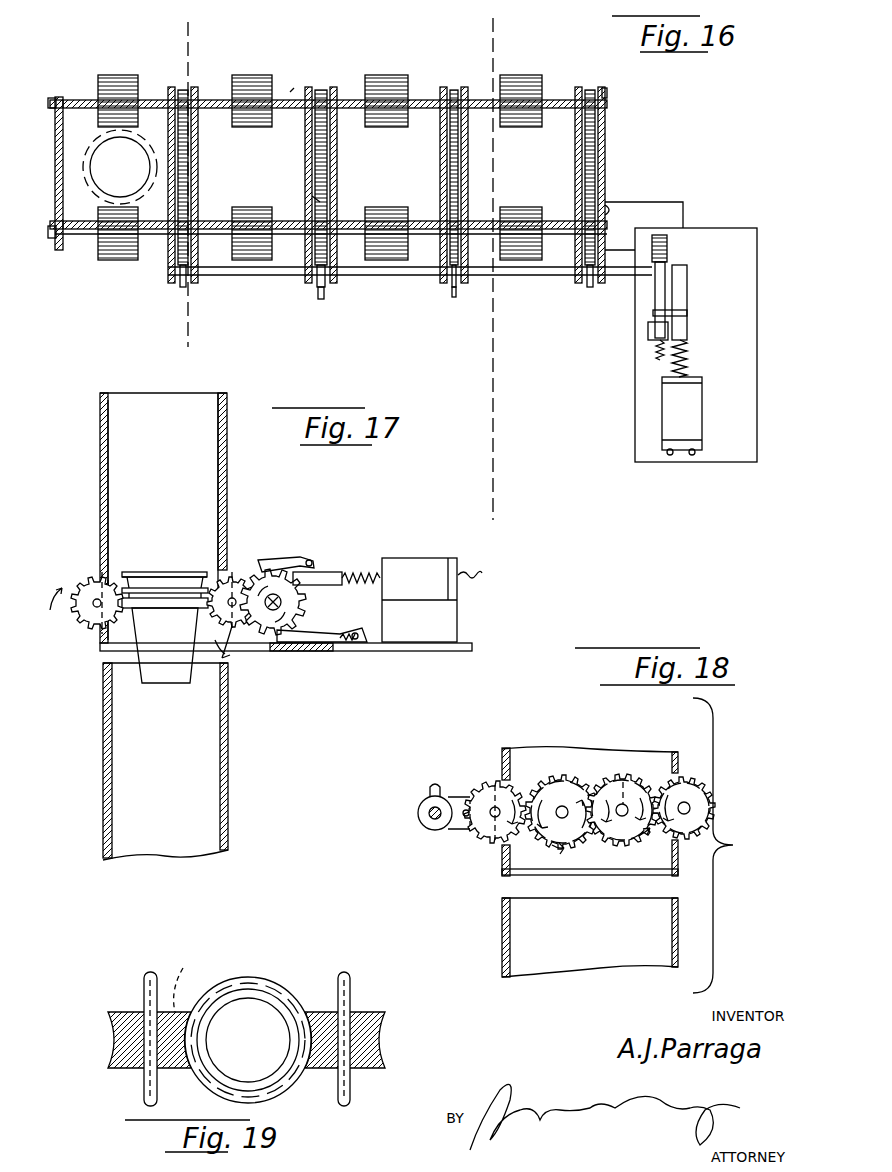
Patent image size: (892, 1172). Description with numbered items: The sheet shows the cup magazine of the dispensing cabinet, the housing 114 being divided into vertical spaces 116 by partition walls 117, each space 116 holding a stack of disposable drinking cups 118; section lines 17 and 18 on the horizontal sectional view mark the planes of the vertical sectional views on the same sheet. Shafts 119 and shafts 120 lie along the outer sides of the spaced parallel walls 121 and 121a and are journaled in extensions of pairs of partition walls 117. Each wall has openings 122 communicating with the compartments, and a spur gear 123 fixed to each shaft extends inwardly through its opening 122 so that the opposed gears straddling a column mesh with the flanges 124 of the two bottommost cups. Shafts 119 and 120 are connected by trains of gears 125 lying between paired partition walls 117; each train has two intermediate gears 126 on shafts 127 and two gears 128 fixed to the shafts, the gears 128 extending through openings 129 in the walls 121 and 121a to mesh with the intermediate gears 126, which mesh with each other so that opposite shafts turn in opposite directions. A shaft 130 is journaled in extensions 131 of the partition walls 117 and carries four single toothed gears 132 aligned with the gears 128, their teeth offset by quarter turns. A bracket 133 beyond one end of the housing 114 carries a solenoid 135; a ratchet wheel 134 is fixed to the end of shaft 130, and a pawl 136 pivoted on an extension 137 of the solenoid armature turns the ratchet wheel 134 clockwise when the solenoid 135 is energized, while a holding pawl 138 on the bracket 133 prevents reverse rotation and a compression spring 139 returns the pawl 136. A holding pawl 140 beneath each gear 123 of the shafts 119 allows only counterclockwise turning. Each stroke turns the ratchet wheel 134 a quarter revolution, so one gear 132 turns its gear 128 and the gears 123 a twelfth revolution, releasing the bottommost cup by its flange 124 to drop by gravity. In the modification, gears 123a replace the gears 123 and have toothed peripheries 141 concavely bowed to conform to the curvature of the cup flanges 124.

In FIG. 16, the section line 17— 17 is at (482, 44).
In FIG. 16, the section line 18— 18 is at (198, 49).
In FIG. 16, the housing 114 is at (612, 135).
In FIG. 16, the vertical spaces 116 is at (420, 118).
In FIG. 17, the vertical spaces 116 is at (128, 400).
In FIG. 16, the partition walls 117 is at (322, 198).
In FIG. 17, the partition walls 117 is at (288, 579).
In FIG. 18, the partition walls 117 is at (590, 749).
In FIG. 16, the drinking cups 118 is at (72, 185).
In FIG. 17, the drinking cups 118 is at (151, 572).
In FIG. 16, the shafts 119 is at (287, 233).
In FIG. 17, the shafts 119 is at (238, 577).
In FIG. 18, the shafts 119 is at (492, 818).
In FIG. 16, the shafts 120 is at (291, 95).
In FIG. 17, the shafts 120 is at (95, 600).
In FIG. 18, the shafts 120 is at (686, 802).
In FIG. 17, the wall 121 is at (218, 413).
In FIG. 17, the wall 121a is at (110, 508).
In FIG. 17, the openings 122 is at (108, 580).
In FIG. 16, the spur gear 123 is at (120, 207).
In FIG. 17, the spur gear 123 is at (217, 615).
In FIG. 19, the gears 123a is at (365, 1010).
In FIG. 17, the flanges 124 is at (183, 627).
In FIG. 19, the flanges 124 is at (270, 990).
In FIG. 16, the trains of gears 125 is at (186, 186).
In FIG. 18, the trains of gears 125 is at (552, 762).
In FIG. 18, the intermediate gears 126 is at (572, 832).
In FIG. 18, the shafts 127 is at (620, 804).
In FIG. 18, the gears 128 is at (490, 787).
In FIG. 18, the openings 129 is at (508, 787).
In FIG. 16, the shaft 130 is at (383, 278).
In FIG. 18, the shaft 130 is at (432, 812).
In FIG. 16, the extensions 131 is at (325, 270).
In FIG. 18, the extensions 131 is at (455, 830).
In FIG. 16, the single toothed gears 132 is at (320, 287).
In FIG. 18, the single toothed gears 132 is at (432, 788).
In FIG. 16, the bracket 133 is at (735, 452).
In FIG. 17, the bracket 133 is at (405, 651).
In FIG. 16, the ratchet wheel 134 is at (668, 248).
In FIG. 17, the ratchet wheel 134 is at (275, 651).
In FIG. 16, the solenoid 135 is at (700, 415).
In FIG. 17, the solenoid 135 is at (425, 565).
In FIG. 16, the pawl 136 is at (665, 292).
In FIG. 17, the pawl 136 is at (288, 557).
In FIG. 16, the extension 137 is at (688, 333).
In FIG. 17, the extension 137 is at (335, 572).
In FIG. 16, the holding pawl 138 is at (655, 327).
In FIG. 17, the holding pawl 138 is at (330, 645).
In FIG. 16, the compression spring 139 is at (688, 358).
In FIG. 17, the compression spring 139 is at (372, 585).
In FIG. 17, the holding pawl 140 is at (222, 658).
In FIG. 19, the toothed peripheries 141 is at (128, 1012).